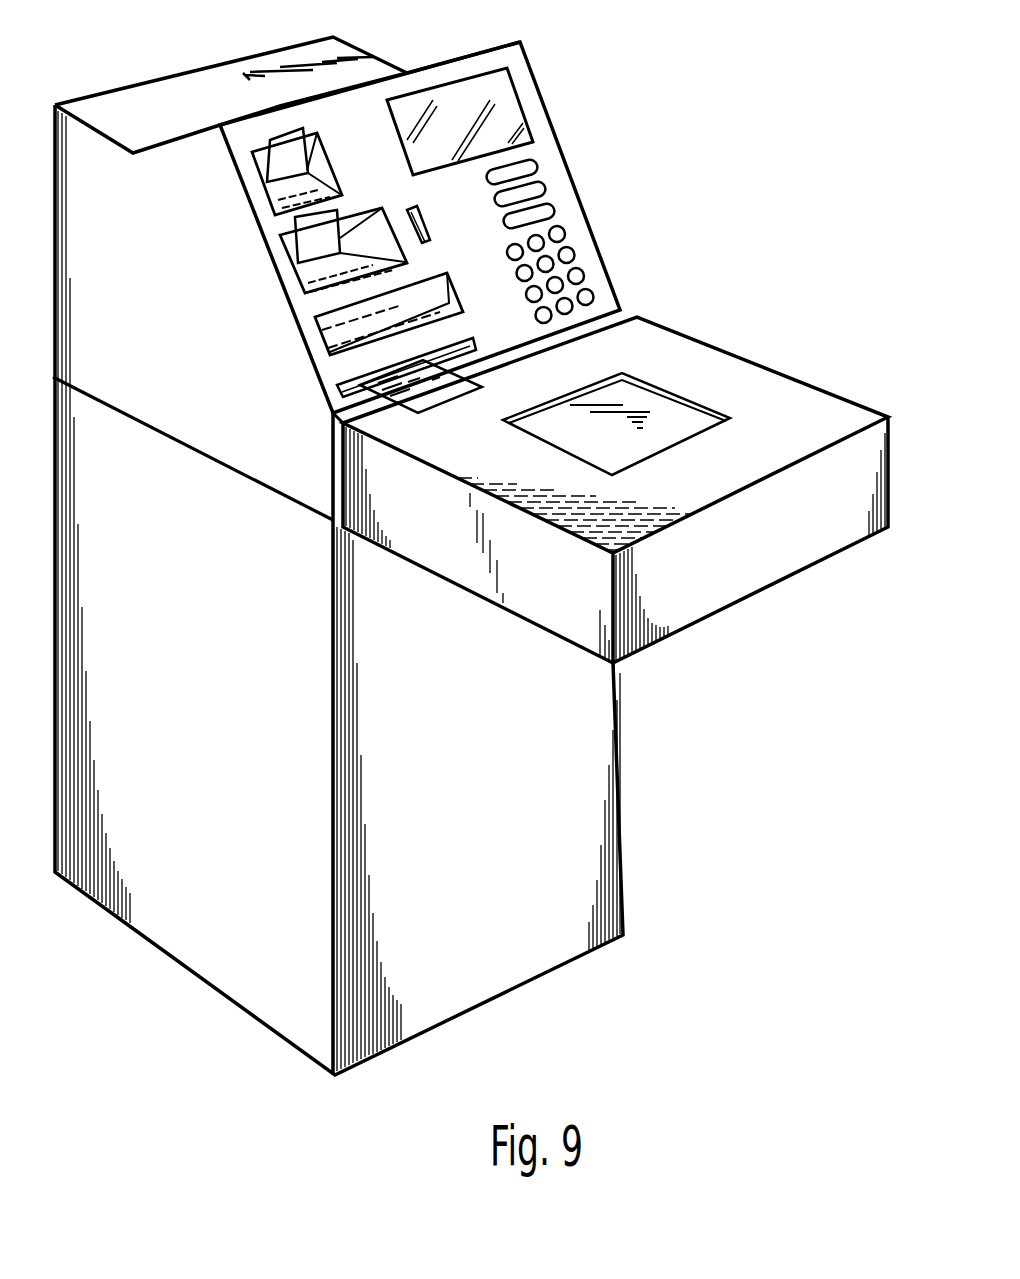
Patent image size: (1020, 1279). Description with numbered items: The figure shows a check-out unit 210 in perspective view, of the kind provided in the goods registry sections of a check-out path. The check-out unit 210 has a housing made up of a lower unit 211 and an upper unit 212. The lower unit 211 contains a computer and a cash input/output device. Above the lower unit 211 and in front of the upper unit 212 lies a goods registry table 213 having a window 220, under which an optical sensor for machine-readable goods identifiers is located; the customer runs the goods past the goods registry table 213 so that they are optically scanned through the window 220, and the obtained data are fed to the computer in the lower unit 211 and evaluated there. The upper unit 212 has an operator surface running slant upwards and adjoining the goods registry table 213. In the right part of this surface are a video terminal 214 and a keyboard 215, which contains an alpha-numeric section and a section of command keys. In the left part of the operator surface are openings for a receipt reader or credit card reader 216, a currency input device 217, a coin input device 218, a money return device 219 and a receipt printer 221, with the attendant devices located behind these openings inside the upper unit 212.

The check-out unit 210 is at (607, 262).
The lower unit 211 is at (615, 797).
The upper unit 212 is at (345, 45).
The goods registry table 213 is at (750, 367).
The video terminal 214 is at (508, 100).
The keyboard 215 is at (568, 248).
The receipt reader or credit card reader 216 is at (282, 194).
The currency input device 217 is at (313, 278).
The coin input device 218 is at (421, 222).
The money return device 219 is at (330, 328).
The window 220 is at (682, 430).
The receipt printer 221 is at (343, 389).